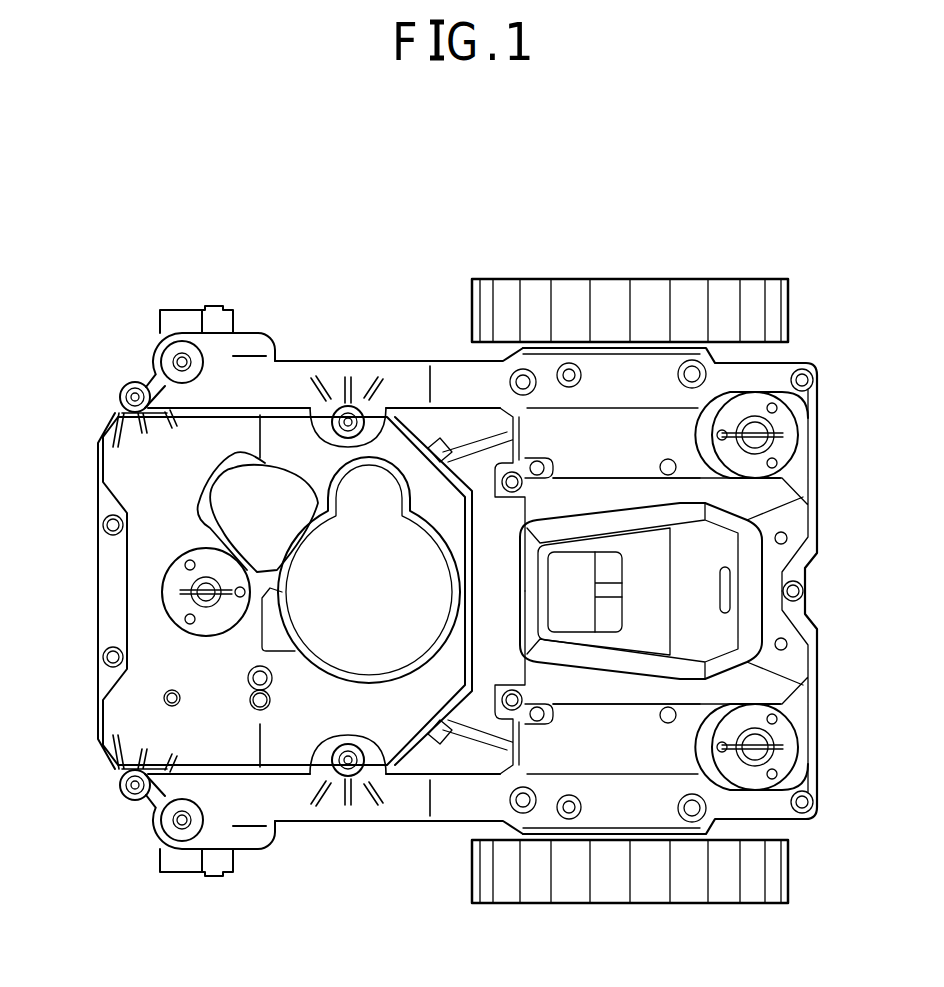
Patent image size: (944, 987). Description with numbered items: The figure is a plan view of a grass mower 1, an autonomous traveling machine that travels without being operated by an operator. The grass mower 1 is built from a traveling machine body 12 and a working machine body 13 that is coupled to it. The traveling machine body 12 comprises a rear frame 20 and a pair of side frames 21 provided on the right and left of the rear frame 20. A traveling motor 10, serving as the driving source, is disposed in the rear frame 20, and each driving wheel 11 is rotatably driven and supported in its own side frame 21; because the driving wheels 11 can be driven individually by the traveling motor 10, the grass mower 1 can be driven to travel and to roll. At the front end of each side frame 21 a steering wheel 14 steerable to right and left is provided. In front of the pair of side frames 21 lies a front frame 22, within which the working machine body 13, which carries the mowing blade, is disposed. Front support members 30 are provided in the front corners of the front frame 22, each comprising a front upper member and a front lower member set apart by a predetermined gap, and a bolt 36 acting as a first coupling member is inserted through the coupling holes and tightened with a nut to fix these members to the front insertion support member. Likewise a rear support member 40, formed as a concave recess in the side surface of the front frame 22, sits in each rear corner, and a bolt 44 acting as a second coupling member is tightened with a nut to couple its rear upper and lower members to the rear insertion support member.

The grass mower 1 is at (508, 212).
The traveling motor 10 is at (707, 592).
The driving wheels 11 is at (641, 288).
The traveling machine body 12 is at (680, 430).
The working machine body 13 is at (330, 608).
The steering wheel 14 is at (252, 352).
The rear frame 20 is at (597, 757).
The side frames 21 is at (414, 361).
The front frame 22 is at (170, 462).
The front support members 30 is at (118, 411).
The bolt 36 is at (137, 398).
The rear support member 40 is at (328, 412).
The bolt 44 is at (356, 404).